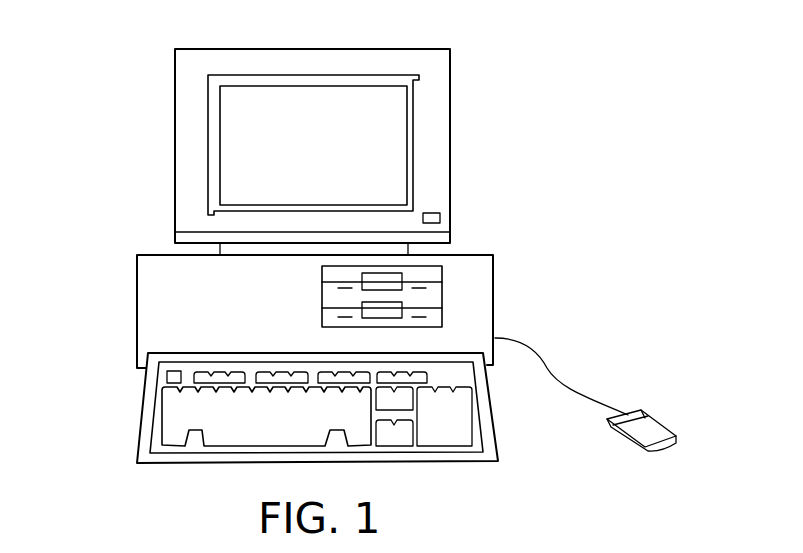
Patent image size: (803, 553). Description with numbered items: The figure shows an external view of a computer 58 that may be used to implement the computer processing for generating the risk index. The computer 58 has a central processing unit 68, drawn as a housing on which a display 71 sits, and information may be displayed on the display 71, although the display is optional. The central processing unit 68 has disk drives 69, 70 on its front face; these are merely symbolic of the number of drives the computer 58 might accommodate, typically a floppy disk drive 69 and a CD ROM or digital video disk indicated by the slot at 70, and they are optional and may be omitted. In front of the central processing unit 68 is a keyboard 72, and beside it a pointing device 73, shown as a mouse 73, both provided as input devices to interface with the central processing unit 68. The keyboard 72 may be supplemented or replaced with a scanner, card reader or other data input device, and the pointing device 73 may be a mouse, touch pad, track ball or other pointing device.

The computer 58 is at (112, 131).
The central processing unit 68 is at (137, 287).
The floppy disk drive 69 is at (315, 292).
The CD ROM or digital video disk slot 70 is at (315, 322).
The display 71 is at (450, 116).
The keyboard 72 is at (143, 408).
The pointing device 73 is at (676, 428).